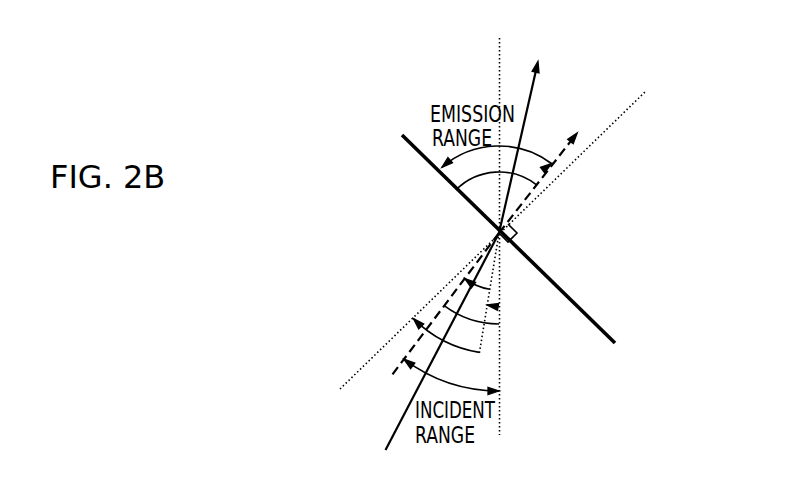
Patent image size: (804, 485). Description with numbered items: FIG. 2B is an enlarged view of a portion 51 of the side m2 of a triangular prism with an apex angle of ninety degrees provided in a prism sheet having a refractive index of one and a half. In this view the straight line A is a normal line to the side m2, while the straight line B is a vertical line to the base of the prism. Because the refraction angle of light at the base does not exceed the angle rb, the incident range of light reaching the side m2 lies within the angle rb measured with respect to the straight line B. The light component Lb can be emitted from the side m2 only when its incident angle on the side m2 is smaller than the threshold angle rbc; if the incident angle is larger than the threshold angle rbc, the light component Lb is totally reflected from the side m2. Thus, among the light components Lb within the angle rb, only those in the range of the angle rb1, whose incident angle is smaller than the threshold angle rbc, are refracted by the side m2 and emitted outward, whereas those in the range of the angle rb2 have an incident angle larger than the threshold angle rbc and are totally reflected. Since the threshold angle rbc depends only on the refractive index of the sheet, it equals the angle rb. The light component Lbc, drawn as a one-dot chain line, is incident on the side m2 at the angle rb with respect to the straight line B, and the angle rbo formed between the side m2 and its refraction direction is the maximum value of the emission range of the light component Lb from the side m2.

The portion of side m2 51 is at (357, 71).
The straight line B is at (499, 221).
The straight line A is at (503, 231).
The side m2 is at (571, 300).
The light component Lb is at (526, 134).
The light component Lbc is at (547, 169).
The angle rbo is at (461, 177).
The threshold angle rbc is at (413, 324).
The angle rb1 is at (464, 280).
The angle rb2 is at (498, 306).
The angle rb is at (490, 323).